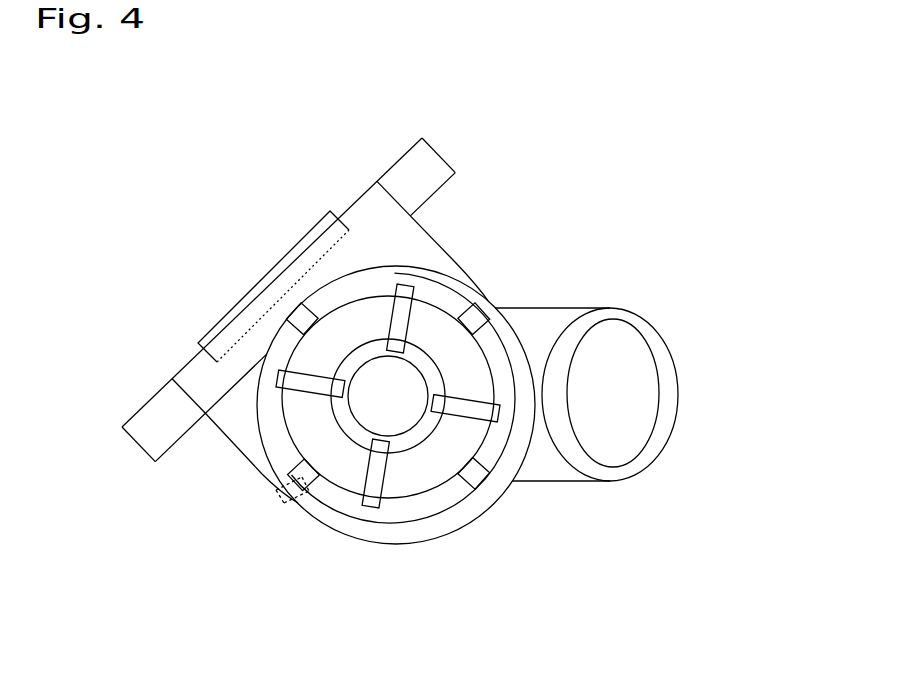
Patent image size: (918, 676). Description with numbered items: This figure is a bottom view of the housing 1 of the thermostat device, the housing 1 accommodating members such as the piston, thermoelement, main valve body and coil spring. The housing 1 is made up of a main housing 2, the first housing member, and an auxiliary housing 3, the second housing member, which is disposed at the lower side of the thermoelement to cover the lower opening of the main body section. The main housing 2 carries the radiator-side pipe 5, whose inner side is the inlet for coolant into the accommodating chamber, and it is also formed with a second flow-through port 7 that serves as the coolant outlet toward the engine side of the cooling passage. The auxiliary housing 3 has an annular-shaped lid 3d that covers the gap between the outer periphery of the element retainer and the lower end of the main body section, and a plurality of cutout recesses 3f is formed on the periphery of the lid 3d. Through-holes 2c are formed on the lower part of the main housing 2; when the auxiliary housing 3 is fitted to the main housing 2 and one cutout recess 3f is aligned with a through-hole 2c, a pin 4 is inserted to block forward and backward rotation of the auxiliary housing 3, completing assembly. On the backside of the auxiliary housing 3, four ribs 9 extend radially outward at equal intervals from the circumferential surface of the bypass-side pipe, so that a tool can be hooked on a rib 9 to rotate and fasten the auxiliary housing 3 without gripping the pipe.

The housing 1 is at (217, 233).
The main housing 2 is at (189, 379).
The through-hole 2c is at (298, 503).
The auxiliary housing 3 is at (423, 478).
The lid 3d is at (358, 532).
The cutout recess 3f is at (294, 306).
The pin 4 is at (292, 487).
The radiator-side pipe 5 is at (633, 393).
The second flow-through port 7 is at (243, 297).
The rib 9 is at (313, 370).